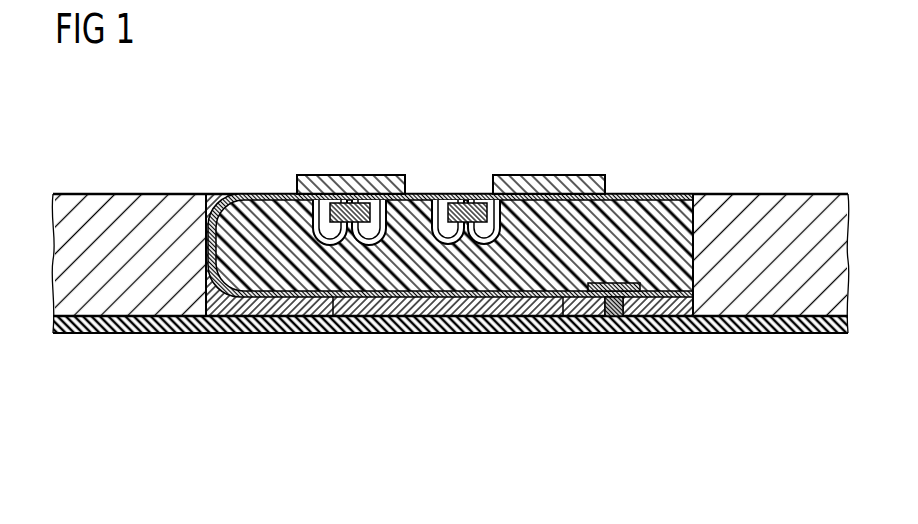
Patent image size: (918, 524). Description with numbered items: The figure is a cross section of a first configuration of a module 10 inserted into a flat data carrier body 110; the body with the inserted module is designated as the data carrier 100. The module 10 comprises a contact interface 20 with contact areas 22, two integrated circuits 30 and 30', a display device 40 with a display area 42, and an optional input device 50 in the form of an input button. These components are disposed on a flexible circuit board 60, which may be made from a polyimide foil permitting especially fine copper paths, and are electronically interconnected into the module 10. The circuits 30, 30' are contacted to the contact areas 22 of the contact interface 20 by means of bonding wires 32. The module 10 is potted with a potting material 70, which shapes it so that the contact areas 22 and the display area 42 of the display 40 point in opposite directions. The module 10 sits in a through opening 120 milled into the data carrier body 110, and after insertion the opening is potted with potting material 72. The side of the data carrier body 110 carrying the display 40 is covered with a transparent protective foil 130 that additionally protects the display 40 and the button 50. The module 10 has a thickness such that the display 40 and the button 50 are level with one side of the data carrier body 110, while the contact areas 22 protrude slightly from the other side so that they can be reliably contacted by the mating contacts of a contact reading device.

The data carrier 100 is at (198, 130).
The module 10 is at (669, 166).
The data carrier body 110 is at (130, 200).
The transparent protective foil 130 is at (127, 333).
The flexible circuit board 60 is at (245, 193).
The potting material 70 is at (283, 196).
The potting material 72 is at (233, 317).
The through opening 120 is at (304, 317).
The contact interface 20 is at (492, 178).
The contact areas 22 is at (327, 175).
The integrated circuit 30 is at (349, 190).
The integrated circuit 30' is at (466, 197).
The bonding wires 32 is at (516, 200).
The display device 40 is at (440, 319).
The display area 42 is at (494, 319).
The input device 50 is at (612, 318).